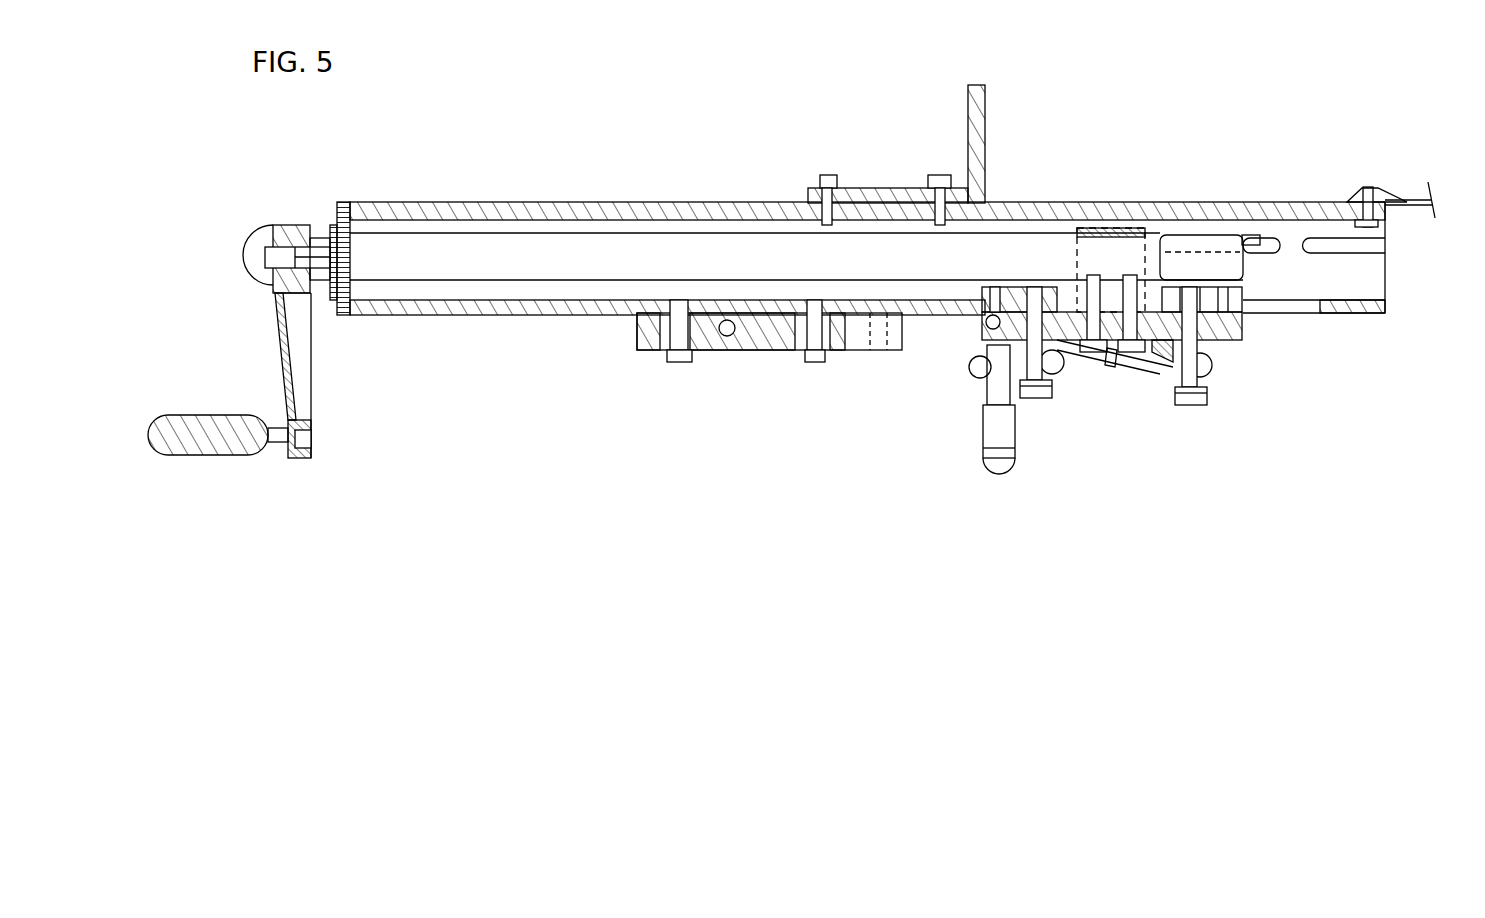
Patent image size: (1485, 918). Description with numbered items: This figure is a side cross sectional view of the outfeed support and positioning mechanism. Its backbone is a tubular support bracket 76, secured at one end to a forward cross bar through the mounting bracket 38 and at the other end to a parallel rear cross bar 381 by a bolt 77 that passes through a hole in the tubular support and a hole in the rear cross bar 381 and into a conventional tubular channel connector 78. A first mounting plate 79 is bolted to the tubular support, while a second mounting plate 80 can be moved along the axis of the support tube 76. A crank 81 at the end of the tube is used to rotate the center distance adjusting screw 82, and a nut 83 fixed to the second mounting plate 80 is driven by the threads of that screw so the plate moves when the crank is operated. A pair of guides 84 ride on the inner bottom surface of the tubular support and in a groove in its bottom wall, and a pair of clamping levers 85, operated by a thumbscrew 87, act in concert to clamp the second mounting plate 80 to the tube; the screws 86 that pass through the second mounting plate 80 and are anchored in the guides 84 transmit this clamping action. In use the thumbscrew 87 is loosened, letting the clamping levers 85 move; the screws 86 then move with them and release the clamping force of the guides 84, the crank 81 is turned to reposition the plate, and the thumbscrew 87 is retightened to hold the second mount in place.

The mounting bracket 38 is at (968, 100).
The tubular support bracket 76 is at (428, 205).
The bolt 77 is at (1368, 190).
The tubular channel connector 78 is at (1380, 192).
The first mounting plate 79 is at (640, 320).
The second mounting plate 80 is at (1235, 335).
The crank 81 is at (235, 455).
The center distance adjusting screw 82 is at (545, 258).
The nut 83 is at (1118, 232).
The guides 84 is at (1017, 295).
The clamping levers 85 is at (1057, 360).
The bolt 86 is at (1190, 407).
The thumbscrew 87 is at (995, 475).
The rear cross bar 381 is at (1412, 210).